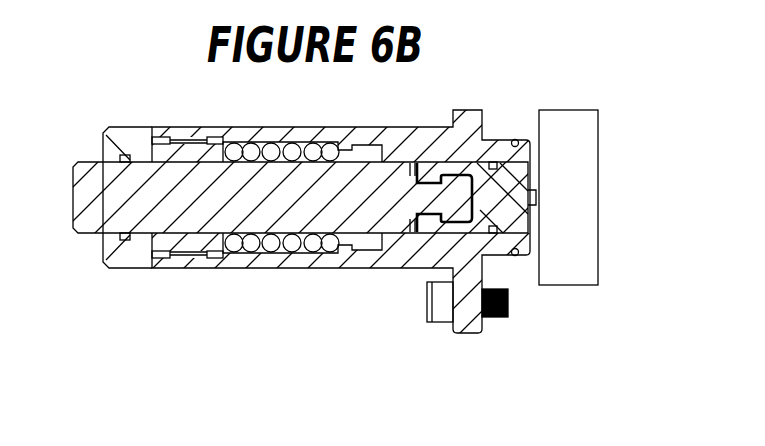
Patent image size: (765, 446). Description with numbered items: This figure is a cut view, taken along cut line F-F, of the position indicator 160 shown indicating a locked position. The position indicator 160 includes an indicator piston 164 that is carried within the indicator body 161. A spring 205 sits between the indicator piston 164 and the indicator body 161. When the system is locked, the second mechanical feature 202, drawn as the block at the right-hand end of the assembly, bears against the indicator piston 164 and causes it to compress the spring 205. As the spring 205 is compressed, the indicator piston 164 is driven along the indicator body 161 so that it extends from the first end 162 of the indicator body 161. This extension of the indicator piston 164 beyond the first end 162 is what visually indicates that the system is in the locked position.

The position indicator 160 is at (220, 360).
The indicator body 161 is at (318, 127).
The first end 162 is at (103, 255).
The indicator piston 164 is at (277, 205).
The second mechanical feature 202 is at (571, 110).
The spring 205 is at (247, 145).